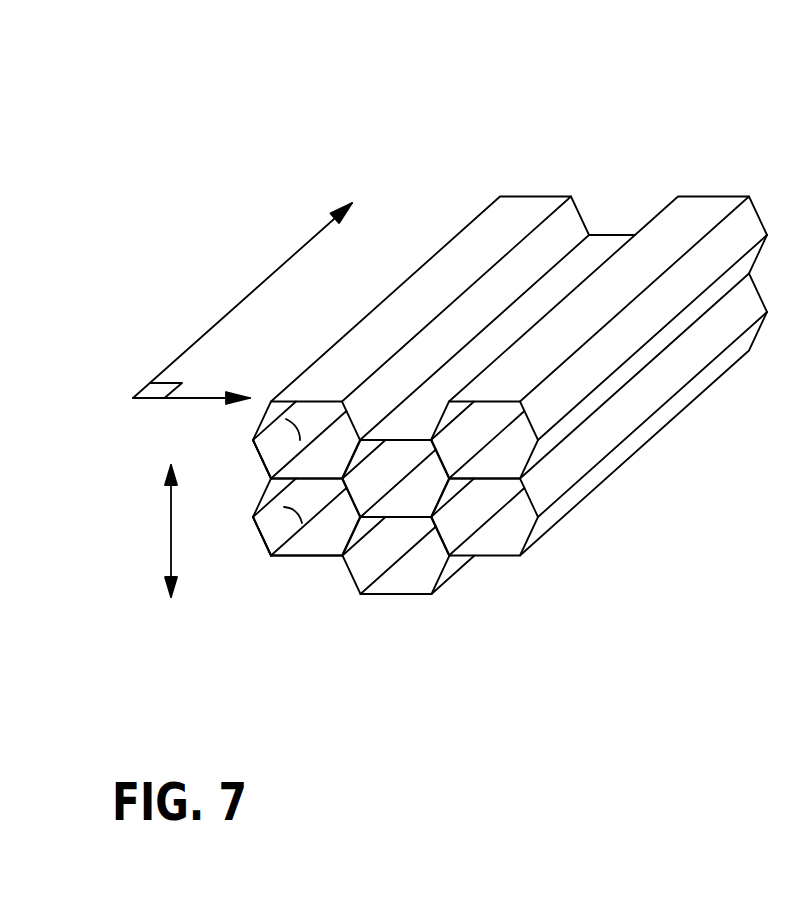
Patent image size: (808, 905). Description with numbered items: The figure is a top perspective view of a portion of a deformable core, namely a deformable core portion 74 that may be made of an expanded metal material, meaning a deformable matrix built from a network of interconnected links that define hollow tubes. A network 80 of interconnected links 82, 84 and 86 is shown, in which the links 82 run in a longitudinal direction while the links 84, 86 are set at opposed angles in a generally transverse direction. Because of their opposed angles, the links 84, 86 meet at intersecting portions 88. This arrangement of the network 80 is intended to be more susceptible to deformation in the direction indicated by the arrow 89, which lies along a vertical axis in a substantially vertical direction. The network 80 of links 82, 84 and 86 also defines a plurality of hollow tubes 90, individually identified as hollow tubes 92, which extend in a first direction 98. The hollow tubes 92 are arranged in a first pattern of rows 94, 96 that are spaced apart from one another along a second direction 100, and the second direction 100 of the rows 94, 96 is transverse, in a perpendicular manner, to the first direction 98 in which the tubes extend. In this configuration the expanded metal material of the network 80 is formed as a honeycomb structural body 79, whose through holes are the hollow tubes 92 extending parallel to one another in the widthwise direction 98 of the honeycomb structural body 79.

The deformable core portion 74 is at (435, 362).
The honeycomb structural body 79 is at (630, 225).
The network 80 is at (303, 570).
The links 82 is at (380, 596).
The links 84 is at (528, 462).
The links 86 is at (527, 416).
The intersecting portions 88 is at (539, 441).
The arrow 89 is at (170, 517).
The hollow tubes 90 is at (473, 573).
The hollow tubes 92 is at (288, 423).
The row 94 is at (253, 533).
The row 96 is at (253, 462).
The first direction 98 is at (183, 353).
The second direction 100 is at (205, 397).